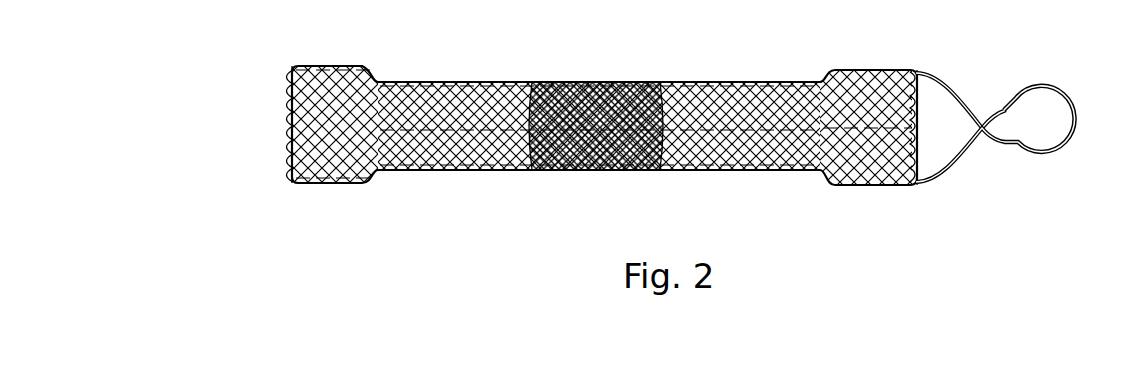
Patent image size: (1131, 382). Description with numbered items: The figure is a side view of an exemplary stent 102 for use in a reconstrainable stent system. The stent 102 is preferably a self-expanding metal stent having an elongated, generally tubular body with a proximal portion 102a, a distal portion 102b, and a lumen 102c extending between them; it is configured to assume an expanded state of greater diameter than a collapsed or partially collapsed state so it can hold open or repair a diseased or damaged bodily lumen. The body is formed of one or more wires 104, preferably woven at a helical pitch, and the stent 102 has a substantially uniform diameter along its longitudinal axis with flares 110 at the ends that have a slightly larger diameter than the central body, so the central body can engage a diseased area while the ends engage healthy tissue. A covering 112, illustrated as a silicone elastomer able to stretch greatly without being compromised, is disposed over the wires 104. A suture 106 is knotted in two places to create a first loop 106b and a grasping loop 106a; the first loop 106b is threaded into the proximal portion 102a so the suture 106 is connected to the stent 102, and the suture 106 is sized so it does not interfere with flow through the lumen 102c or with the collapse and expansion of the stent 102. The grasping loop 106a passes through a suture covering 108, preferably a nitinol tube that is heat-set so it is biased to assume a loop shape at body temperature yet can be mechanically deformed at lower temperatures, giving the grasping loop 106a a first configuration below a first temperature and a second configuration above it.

The stent 102 is at (613, 122).
The proximal portion 102a is at (887, 186).
The distal portion 102b is at (303, 185).
The lumen 102c is at (287, 165).
The wires 104 is at (558, 171).
The suture 106 is at (1009, 132).
The grasping loop 106a is at (1005, 143).
The first loop 106b is at (975, 140).
The suture covering 108 is at (1032, 85).
The flares 110 is at (332, 64).
The covering 112 is at (480, 82).